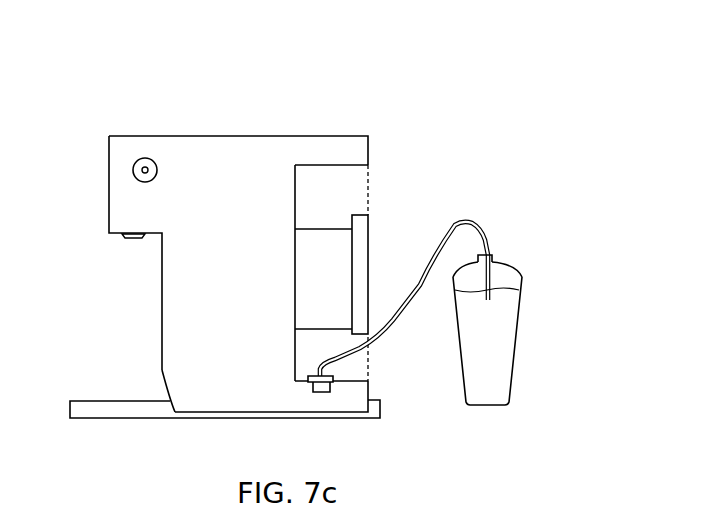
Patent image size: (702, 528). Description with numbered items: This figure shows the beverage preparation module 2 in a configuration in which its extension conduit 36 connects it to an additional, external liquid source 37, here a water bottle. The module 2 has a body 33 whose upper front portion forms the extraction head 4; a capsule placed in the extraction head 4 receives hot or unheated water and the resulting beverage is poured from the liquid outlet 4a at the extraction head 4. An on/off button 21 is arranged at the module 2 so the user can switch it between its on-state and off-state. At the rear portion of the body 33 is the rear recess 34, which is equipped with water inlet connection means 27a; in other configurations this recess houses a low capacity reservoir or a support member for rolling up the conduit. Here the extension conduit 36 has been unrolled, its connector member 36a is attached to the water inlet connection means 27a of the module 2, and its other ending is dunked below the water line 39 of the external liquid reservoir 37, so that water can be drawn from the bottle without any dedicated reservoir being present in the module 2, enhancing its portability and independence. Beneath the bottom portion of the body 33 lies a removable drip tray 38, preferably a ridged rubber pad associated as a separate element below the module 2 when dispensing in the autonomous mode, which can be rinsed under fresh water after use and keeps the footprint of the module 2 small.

The beverage preparation module 2 is at (307, 136).
The extraction head 4 is at (115, 190).
The liquid outlet 4a is at (132, 240).
The on/off button 21 is at (147, 158).
The body 33 is at (240, 282).
The rear recess 34 is at (347, 165).
The extension conduit 36 is at (456, 223).
The connector member 36a is at (337, 378).
The water inlet connection means 27a is at (320, 393).
The external liquid source 37 is at (502, 363).
The drip tray 38 is at (215, 420).
The water line 39 is at (507, 270).